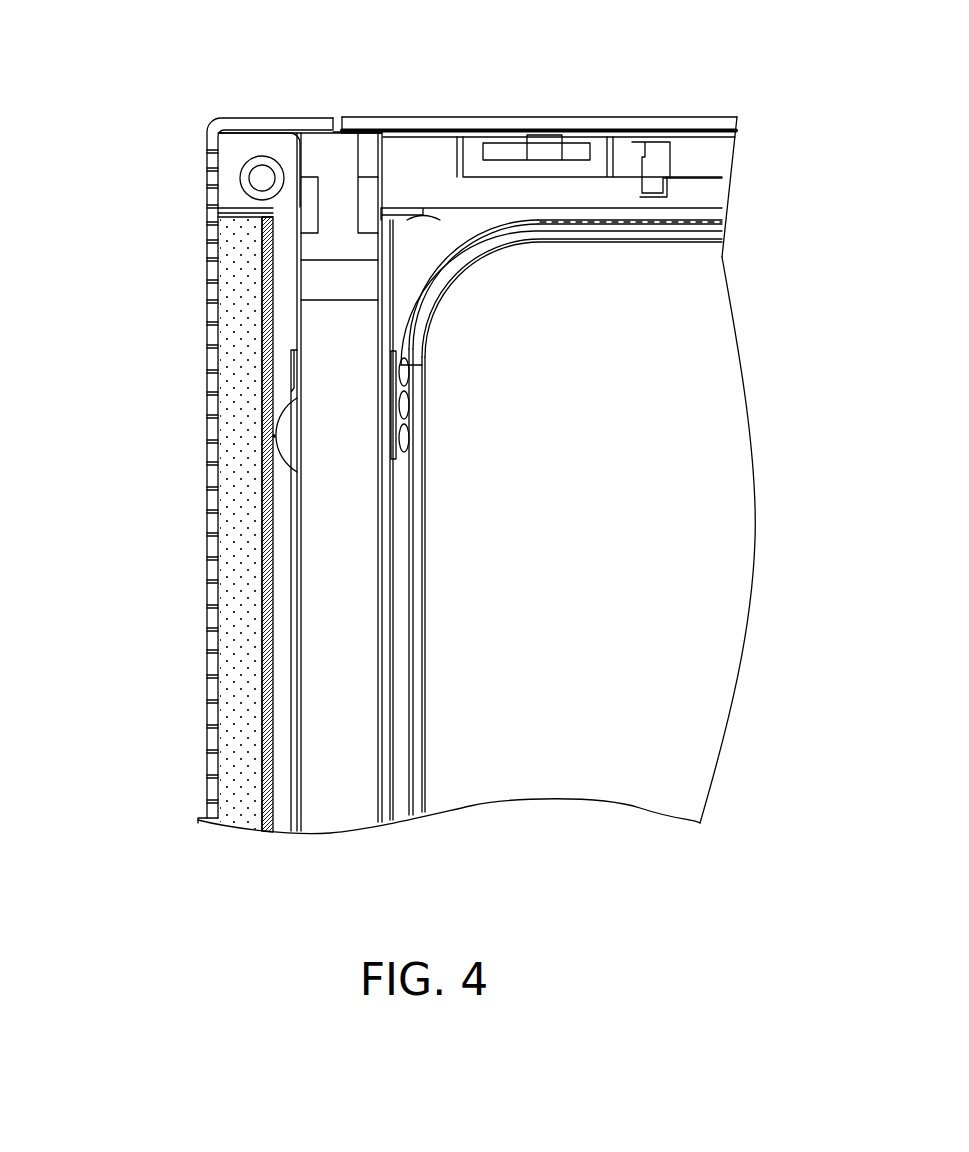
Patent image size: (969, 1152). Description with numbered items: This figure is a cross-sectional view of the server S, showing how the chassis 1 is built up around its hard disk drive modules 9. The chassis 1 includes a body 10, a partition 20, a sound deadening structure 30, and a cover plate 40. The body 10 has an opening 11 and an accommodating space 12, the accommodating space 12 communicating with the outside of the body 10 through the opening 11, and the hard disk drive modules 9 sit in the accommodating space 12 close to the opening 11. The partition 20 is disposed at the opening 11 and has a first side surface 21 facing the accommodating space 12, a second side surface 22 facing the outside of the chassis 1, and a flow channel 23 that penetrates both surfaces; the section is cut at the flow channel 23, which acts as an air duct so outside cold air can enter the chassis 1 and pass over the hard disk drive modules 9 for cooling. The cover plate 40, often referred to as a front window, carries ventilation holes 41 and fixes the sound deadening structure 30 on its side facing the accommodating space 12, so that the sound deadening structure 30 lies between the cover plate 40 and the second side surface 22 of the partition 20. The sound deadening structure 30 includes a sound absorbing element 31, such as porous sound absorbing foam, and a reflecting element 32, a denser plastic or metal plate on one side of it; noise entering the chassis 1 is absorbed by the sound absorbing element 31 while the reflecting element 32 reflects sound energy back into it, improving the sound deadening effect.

The server S is at (122, 46).
The chassis 1 is at (428, 112).
The hard disk drive module 9 is at (748, 540).
The body 10 is at (618, 118).
The opening 11 is at (340, 115).
The accommodating space 12 is at (553, 200).
The partition 20 is at (353, 783).
The first side surface 21 is at (378, 492).
The second side surface 22 is at (298, 415).
The flow channel 23 is at (345, 548).
The sound deadening structure 30 is at (252, 505).
The sound absorbing element 31 is at (233, 647).
The reflecting element 32 is at (272, 707).
The cover plate 40 is at (231, 128).
The ventilation hole 41 is at (215, 283).